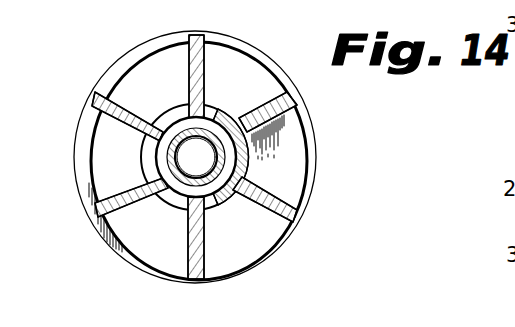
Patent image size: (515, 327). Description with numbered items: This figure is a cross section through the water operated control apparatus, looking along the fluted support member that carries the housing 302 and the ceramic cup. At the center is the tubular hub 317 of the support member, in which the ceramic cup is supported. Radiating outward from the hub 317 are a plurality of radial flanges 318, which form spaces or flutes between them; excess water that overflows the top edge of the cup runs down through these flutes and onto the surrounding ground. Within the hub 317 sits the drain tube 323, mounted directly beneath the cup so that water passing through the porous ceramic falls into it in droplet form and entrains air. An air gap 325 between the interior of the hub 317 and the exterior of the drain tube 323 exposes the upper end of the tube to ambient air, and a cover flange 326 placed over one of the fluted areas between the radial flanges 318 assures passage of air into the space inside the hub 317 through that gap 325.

The housing 302 is at (120, 68).
The tubular hub 317 is at (172, 202).
The radial flanges 318 is at (266, 101).
The drain tube 323 is at (166, 152).
The air gap 325 is at (228, 162).
The cover flange 326 is at (282, 138).